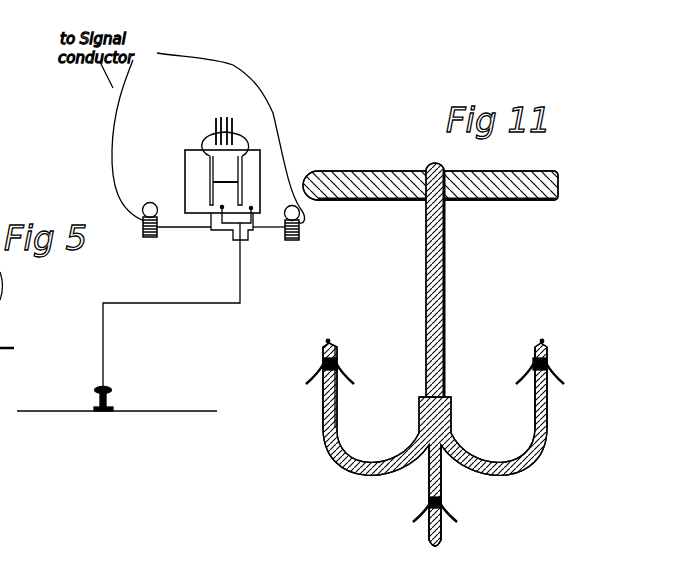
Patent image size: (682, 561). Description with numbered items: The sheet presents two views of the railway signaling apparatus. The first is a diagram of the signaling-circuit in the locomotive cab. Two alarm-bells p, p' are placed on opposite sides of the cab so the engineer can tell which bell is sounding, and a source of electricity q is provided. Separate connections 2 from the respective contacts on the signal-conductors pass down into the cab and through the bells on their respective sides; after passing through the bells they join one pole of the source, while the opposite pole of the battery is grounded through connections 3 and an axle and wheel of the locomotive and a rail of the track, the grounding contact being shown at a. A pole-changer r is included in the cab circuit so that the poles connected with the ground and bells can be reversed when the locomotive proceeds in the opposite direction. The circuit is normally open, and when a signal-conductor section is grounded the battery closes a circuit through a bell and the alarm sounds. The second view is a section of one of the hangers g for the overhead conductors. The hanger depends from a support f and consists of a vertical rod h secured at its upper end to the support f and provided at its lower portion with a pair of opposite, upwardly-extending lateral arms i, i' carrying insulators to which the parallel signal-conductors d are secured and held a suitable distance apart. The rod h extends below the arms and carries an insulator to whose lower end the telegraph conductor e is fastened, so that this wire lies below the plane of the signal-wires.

In FIG. 5, the connections 2 is at (121, 100).
In FIG. 5, the connections 3 is at (240, 288).
In FIG. 5, the alarm-bell p is at (174, 235).
In FIG. 5, the alarm-bell p' is at (276, 236).
In FIG. 5, the pole-changer r is at (222, 187).
In FIG. 5, the source of electricity q is at (224, 119).
In FIG. 5, the track contact a is at (117, 397).
In FIG. 5, the hanger g is at (0, 320).
In FIG. 11, the support f is at (558, 181).
In FIG. 11, the vertical rod h is at (444, 275).
In FIG. 11, the lateral arm i is at (527, 387).
In FIG. 11, the lateral arm i' is at (343, 387).
In FIG. 11, the signal-conductor d is at (332, 340).
In FIG. 11, the telegraph conductor e is at (443, 548).